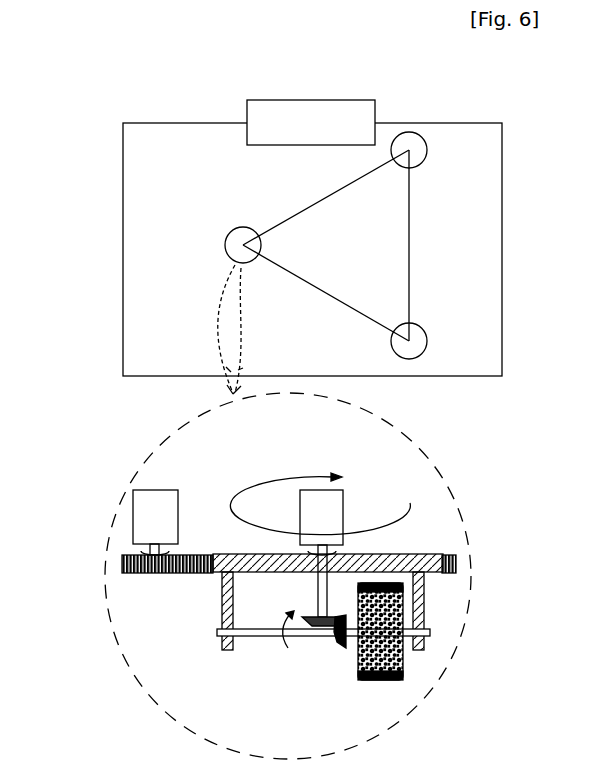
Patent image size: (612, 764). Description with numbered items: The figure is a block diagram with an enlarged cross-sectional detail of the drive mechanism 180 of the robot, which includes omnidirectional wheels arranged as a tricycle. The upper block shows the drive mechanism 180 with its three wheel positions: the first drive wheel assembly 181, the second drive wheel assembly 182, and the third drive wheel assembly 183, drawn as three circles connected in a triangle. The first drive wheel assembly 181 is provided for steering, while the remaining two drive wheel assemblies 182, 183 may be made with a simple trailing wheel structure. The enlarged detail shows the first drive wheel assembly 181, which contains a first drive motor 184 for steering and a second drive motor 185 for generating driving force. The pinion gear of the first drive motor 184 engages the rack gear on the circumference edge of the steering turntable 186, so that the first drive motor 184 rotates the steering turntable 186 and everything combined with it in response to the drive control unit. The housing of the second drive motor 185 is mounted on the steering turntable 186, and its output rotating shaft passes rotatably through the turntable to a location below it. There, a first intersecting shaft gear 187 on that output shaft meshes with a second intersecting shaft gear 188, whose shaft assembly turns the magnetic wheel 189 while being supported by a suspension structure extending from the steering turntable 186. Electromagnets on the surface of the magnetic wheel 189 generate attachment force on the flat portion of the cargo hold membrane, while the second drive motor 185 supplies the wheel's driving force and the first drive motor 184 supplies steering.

The drive mechanism 180 is at (309, 100).
The first drive wheel assembly 181 is at (227, 242).
The second drive wheel assembly 182 is at (426, 148).
The third drive wheel assembly 183 is at (426, 340).
The first drive motor 184 is at (165, 490).
The second drive motor 185 is at (332, 500).
The steering turntable 186 is at (457, 560).
The first intersecting shaft gear 187 is at (310, 621).
The second intersecting shaft gear 188 is at (337, 643).
The magnetic wheel 189 is at (406, 655).